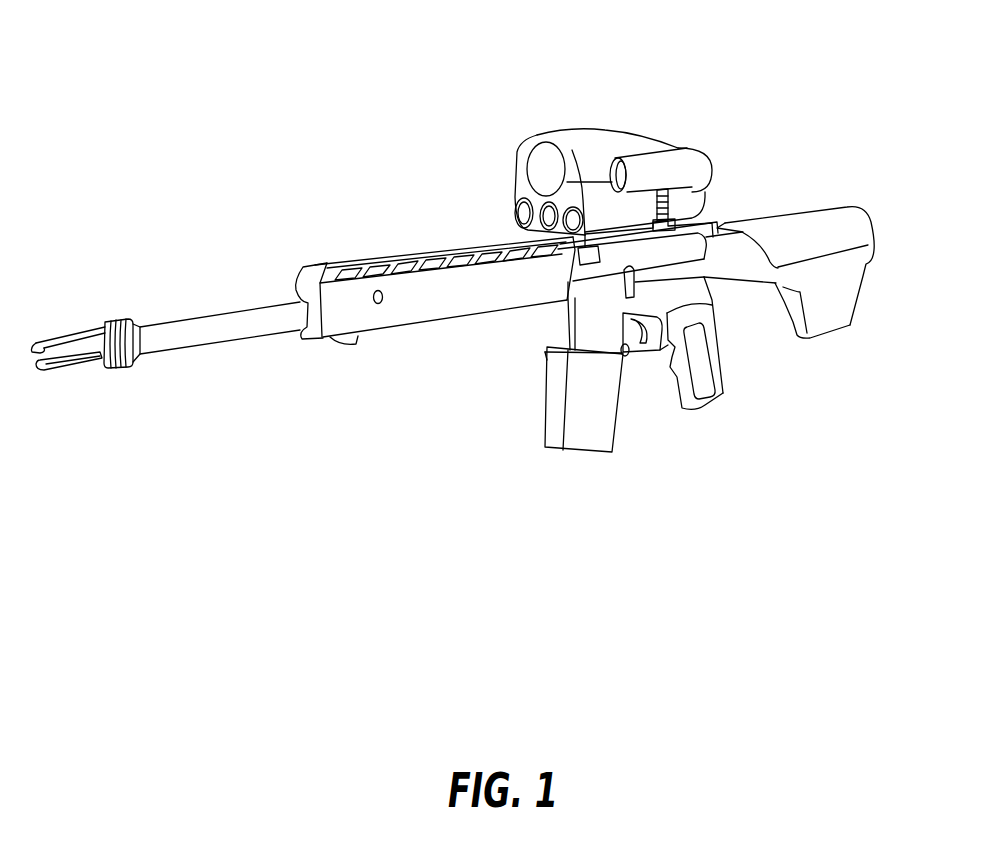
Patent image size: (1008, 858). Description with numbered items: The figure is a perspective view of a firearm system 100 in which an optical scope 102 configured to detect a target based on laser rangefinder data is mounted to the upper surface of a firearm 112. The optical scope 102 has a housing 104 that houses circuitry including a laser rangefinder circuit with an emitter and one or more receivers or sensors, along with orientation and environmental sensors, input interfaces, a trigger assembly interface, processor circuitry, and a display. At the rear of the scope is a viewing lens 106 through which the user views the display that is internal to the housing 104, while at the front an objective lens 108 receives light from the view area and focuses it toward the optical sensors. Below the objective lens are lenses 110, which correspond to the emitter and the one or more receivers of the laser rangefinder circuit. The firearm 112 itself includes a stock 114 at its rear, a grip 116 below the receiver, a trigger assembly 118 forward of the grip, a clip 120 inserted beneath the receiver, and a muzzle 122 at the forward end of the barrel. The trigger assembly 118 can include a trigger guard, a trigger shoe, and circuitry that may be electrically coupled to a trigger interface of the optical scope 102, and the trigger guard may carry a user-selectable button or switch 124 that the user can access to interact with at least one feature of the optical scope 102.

The firearm system 100 is at (180, 64).
The optical scope 102 is at (718, 68).
The housing 104 is at (592, 126).
The viewing lens 106 is at (687, 153).
The objective lens 108 is at (535, 165).
The lenses 110 is at (528, 208).
The firearm 112 is at (264, 283).
The stock 114 is at (826, 223).
The grip 116 is at (703, 404).
The trigger assembly 118 is at (647, 378).
The clip 120 is at (547, 393).
The muzzle 122 is at (218, 343).
The user-selectable button or switch 124 is at (624, 358).